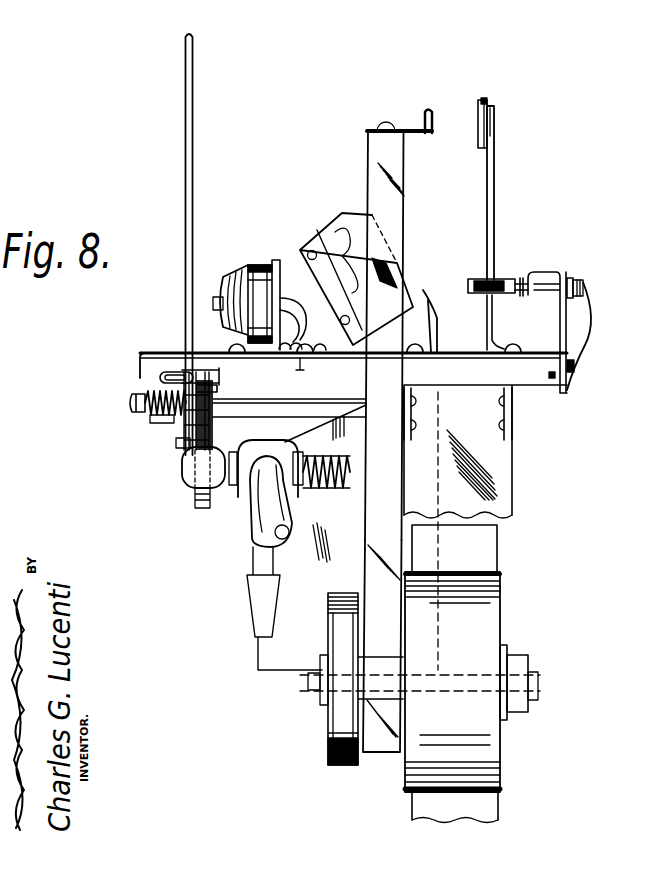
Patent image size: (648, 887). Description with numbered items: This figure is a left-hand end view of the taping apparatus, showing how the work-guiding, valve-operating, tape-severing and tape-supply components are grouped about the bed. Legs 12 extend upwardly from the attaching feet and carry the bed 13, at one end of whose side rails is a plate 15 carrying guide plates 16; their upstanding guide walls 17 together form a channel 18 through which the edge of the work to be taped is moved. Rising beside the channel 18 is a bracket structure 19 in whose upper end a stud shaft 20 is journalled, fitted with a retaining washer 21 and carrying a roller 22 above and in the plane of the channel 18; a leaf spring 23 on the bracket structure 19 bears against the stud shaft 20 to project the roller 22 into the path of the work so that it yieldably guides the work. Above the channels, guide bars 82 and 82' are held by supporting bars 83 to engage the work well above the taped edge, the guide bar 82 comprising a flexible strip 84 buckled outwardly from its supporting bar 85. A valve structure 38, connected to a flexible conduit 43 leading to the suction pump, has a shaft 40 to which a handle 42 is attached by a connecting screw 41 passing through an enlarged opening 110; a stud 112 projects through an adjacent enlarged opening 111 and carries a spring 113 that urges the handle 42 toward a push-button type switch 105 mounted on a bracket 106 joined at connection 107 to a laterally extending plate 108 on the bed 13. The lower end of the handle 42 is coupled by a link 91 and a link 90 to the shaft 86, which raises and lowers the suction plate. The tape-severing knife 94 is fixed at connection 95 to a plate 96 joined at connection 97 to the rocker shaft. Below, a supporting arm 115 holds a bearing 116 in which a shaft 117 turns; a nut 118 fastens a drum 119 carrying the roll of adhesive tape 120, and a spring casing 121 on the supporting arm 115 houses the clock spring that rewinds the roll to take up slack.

The legs 12 is at (514, 470).
The bed 13 is at (563, 393).
The plate 15 is at (532, 362).
The guide plates 16 is at (424, 354).
The guide walls 17 is at (441, 300).
The channel 18 is at (456, 335).
The bracket structure 19 is at (560, 272).
The stud shaft 20 is at (531, 270).
The retaining washer 21 is at (584, 285).
The roller 22 is at (501, 278).
The leaf spring 23 is at (592, 300).
The valve structure 38 is at (248, 495).
The shaft 40 is at (187, 483).
The connecting screw 41 is at (182, 446).
The handle 42 is at (194, 222).
The flexible conduit 43 is at (292, 540).
The guide bar 82 is at (411, 110).
The guide bar 82' is at (517, 120).
The supporting bars 83 is at (397, 208).
The flexible strip 84 is at (487, 104).
The supporting bar 85 is at (483, 98).
The shaft 86 is at (305, 410).
The link 90 is at (210, 376).
The link 91 is at (168, 371).
The knife 94 is at (338, 220).
The connection 95 is at (305, 314).
The plate 96 is at (338, 344).
The connection 97 is at (422, 308).
The push-button type switch 105 is at (213, 300).
The bracket 106 is at (268, 262).
The connection 107 is at (301, 359).
The laterally extending plate 108 is at (153, 352).
The enlarged opening 110 is at (182, 426).
The enlarged opening 111 is at (216, 396).
The stud 112 is at (142, 412).
The spring 113 is at (130, 401).
The supporting arm 115 is at (396, 531).
The bearing 116 is at (372, 657).
The shaft 117 is at (540, 668).
The nut 118 is at (518, 655).
The drum 119 is at (480, 604).
The roll of adhesive tape 120 is at (500, 798).
The spring casing 121 is at (326, 720).